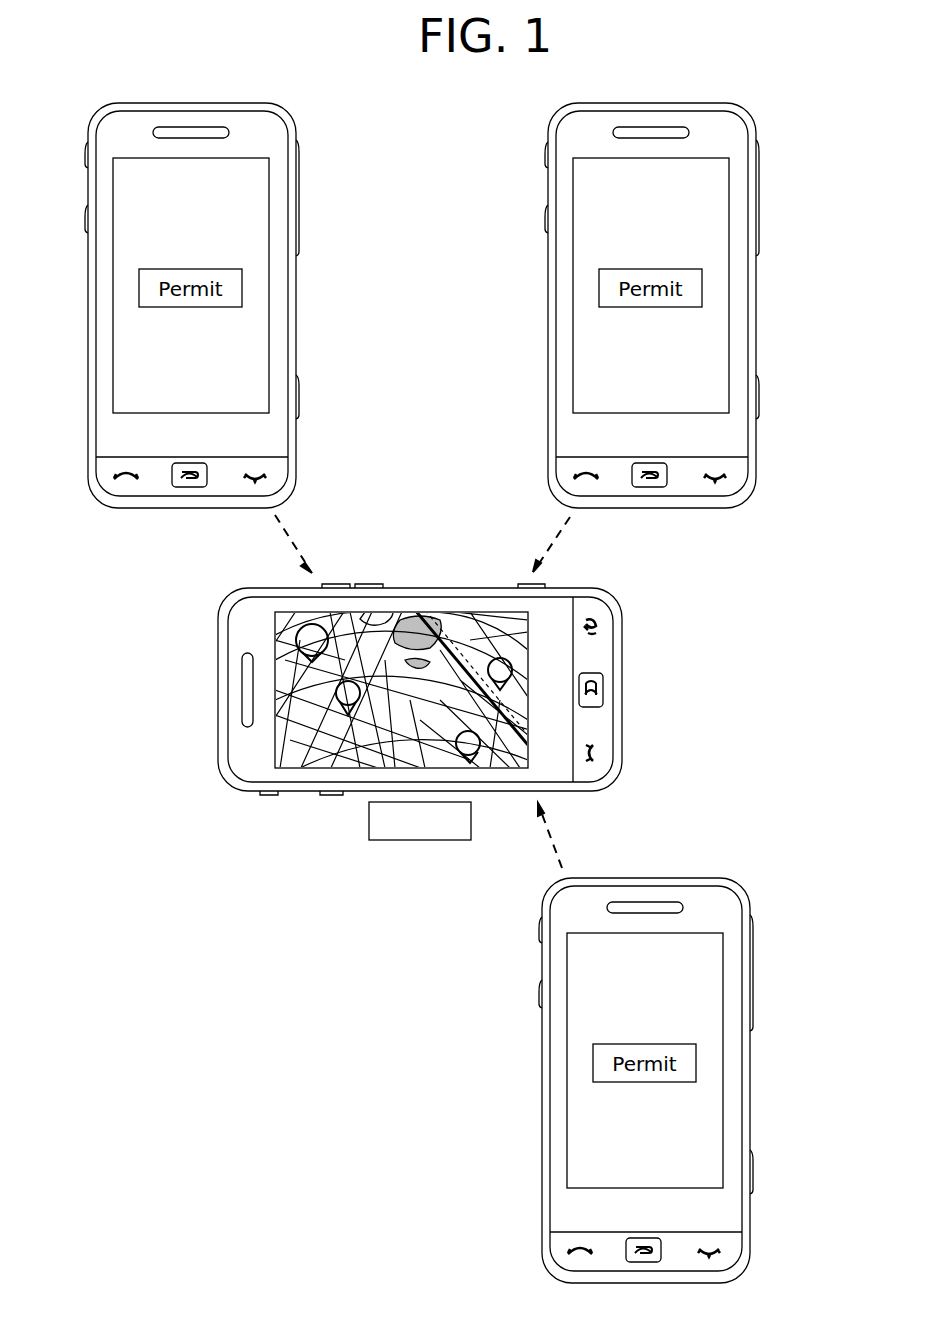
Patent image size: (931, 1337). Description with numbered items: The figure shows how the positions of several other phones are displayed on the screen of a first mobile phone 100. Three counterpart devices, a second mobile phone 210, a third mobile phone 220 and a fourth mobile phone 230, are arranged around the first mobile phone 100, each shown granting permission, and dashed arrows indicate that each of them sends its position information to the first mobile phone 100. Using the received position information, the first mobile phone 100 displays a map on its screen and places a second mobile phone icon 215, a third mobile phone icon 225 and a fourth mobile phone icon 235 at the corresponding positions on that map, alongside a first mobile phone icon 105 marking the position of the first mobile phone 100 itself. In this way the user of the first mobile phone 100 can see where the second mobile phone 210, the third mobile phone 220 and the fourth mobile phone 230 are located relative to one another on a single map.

The first mobile phone 100 is at (422, 588).
The first mobile phone icon 105 is at (278, 630).
The second mobile phone 210 is at (124, 103).
The second mobile phone icon 215 is at (528, 638).
The third mobile phone 220 is at (722, 103).
The third mobile phone icon 225 is at (480, 757).
The fourth mobile phone 230 is at (715, 878).
The fourth mobile phone icon 235 is at (318, 733).